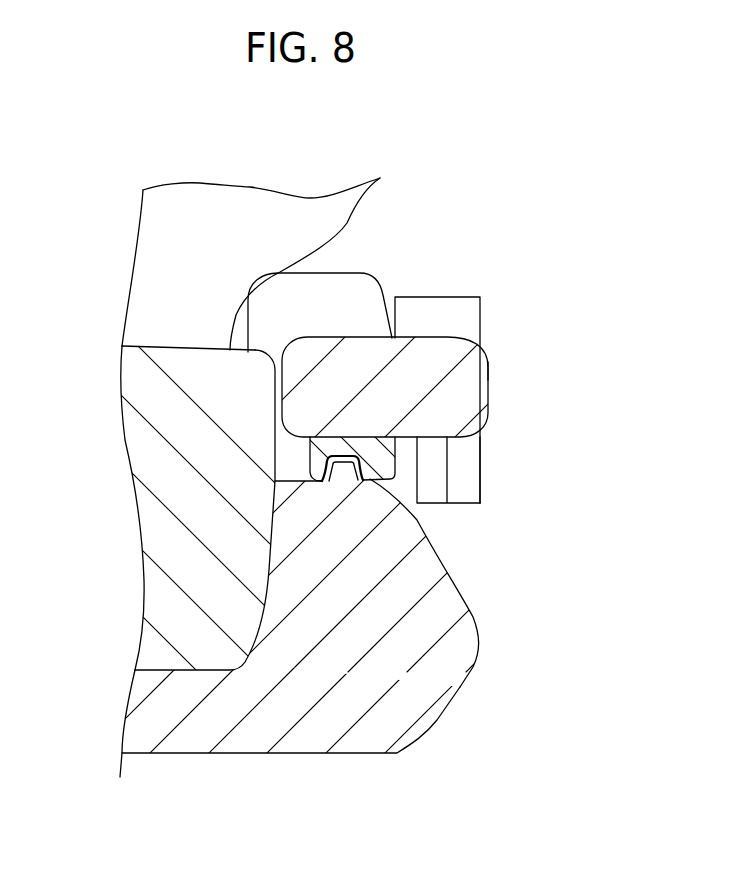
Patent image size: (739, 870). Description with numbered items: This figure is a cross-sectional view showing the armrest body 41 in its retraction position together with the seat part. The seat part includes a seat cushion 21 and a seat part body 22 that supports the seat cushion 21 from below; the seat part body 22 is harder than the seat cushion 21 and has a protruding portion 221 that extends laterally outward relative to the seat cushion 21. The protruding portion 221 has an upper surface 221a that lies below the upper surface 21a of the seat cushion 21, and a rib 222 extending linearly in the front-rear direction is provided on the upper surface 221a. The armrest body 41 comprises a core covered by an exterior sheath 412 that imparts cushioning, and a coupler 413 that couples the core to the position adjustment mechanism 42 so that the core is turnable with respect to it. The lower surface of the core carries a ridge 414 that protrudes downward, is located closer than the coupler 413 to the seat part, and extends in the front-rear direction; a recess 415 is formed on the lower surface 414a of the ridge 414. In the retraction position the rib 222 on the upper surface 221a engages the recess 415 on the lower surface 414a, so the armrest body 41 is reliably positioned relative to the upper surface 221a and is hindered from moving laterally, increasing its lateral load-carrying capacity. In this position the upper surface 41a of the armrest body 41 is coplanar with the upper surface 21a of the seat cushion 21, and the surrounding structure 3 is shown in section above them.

The vehicle body panel 3 is at (338, 215).
The seat cushion 21 is at (160, 530).
The upper surface of the seat cushion 21a is at (155, 342).
The seat part body 22 is at (190, 742).
The protruding portion 221 is at (447, 592).
The upper surface of the protruding portion 221a is at (287, 478).
The rib 222 is at (327, 463).
The armrest body 41 is at (492, 351).
The upper surface of the armrest body 41a is at (357, 338).
The exterior sheath 412 is at (488, 398).
The coupler 413 is at (437, 456).
The ridge 414 is at (310, 445).
The lower surface of the ridge 414a is at (377, 482).
The recess 415 is at (484, 370).
The position adjustment mechanism 42 is at (497, 481).